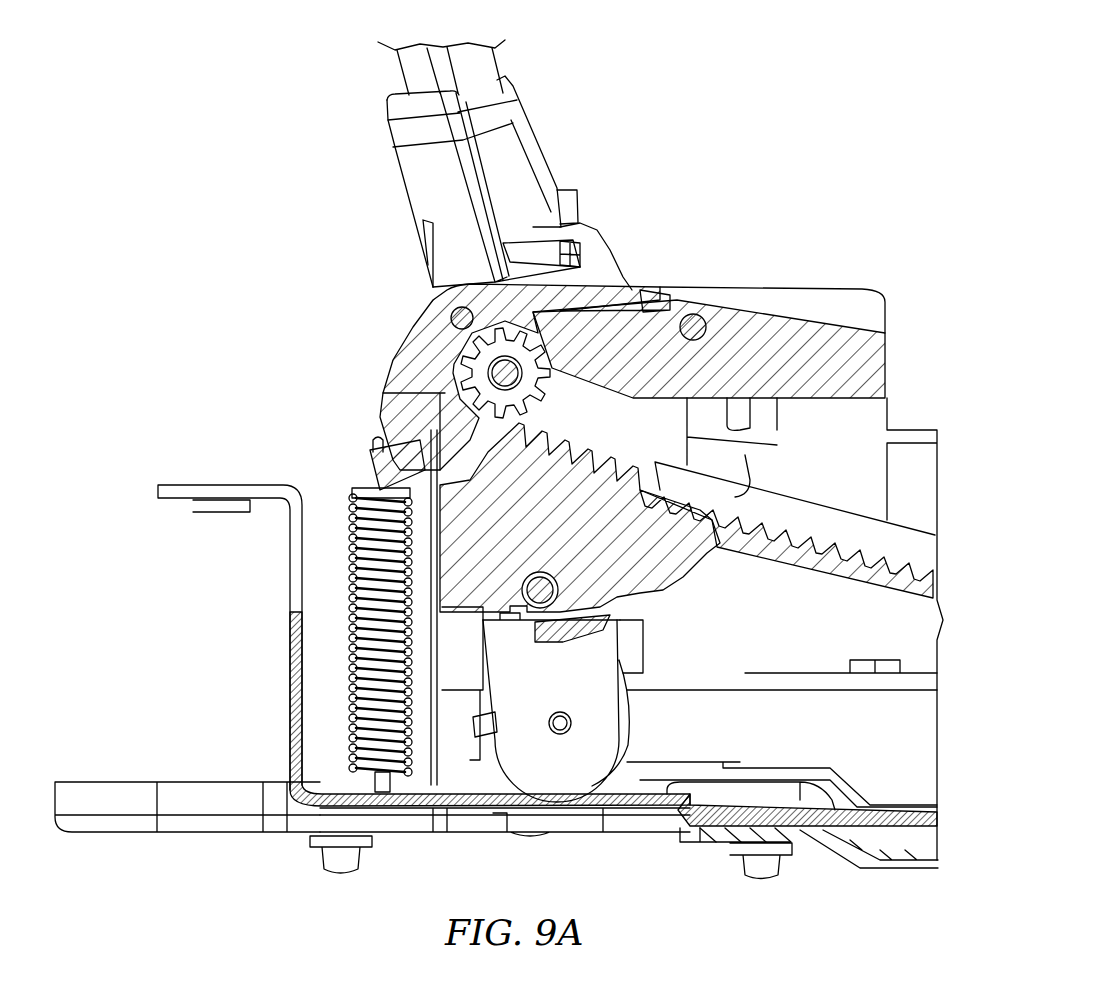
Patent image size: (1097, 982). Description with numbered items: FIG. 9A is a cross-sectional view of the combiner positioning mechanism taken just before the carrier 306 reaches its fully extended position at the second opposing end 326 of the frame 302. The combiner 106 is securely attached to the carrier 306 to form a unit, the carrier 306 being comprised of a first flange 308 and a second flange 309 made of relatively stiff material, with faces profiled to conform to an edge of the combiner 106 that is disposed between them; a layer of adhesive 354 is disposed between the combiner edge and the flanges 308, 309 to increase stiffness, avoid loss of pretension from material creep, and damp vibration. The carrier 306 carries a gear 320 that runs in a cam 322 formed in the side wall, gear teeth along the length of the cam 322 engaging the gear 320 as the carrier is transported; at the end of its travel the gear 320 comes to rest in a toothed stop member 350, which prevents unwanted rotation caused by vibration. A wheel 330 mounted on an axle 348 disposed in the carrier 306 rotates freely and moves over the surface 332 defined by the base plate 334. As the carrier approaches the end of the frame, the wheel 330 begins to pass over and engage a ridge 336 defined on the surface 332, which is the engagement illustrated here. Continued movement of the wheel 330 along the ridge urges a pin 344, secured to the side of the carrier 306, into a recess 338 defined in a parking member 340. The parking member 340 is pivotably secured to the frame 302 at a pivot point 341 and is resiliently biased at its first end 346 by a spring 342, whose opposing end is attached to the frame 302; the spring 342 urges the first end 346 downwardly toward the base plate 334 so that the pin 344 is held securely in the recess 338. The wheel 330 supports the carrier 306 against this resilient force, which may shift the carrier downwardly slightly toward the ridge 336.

The combiner 106 is at (396, 68).
The first flange 308 is at (418, 154).
The second flange 309 is at (540, 133).
The carrier 306 is at (421, 224).
The layer of adhesive 354 is at (513, 130).
The parking member 340 is at (645, 292).
The pivot point 341 is at (702, 316).
The pin 344 is at (450, 320).
The recess 338 is at (425, 366).
The stop member 350 is at (437, 403).
The gear 320 is at (555, 412).
The first end of the parking member 346 is at (372, 466).
The spring 342 is at (352, 543).
The frame 302 is at (292, 600).
The second opposing end of the frame 326 is at (116, 782).
The cam 322 is at (820, 570).
The axle 348 is at (571, 720).
The wheel 330 is at (628, 760).
The surface 332 is at (900, 805).
The ridge 336 is at (710, 804).
The base plate 334 is at (412, 812).